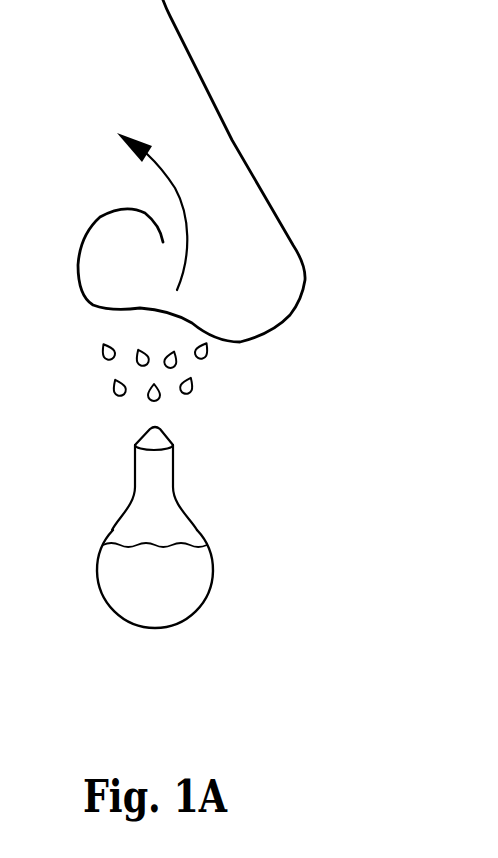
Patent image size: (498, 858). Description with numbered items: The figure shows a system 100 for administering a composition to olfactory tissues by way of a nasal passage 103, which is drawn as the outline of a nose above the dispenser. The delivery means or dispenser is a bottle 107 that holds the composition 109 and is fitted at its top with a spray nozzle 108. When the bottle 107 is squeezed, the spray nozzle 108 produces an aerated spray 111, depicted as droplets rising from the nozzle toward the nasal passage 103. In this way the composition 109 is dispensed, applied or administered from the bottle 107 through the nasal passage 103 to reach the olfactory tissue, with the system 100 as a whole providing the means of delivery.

The system 100 is at (227, 523).
The nasal passage 103 is at (173, 181).
The bottle 107 is at (212, 552).
The spray nozzle 108 is at (165, 463).
The composition 109 is at (200, 587).
The aerated spray 111 is at (200, 390).